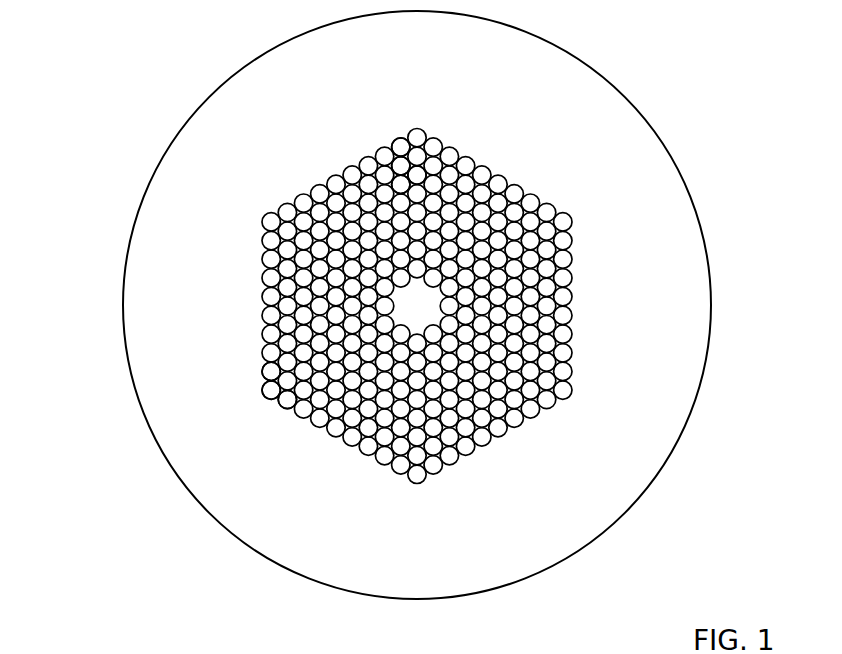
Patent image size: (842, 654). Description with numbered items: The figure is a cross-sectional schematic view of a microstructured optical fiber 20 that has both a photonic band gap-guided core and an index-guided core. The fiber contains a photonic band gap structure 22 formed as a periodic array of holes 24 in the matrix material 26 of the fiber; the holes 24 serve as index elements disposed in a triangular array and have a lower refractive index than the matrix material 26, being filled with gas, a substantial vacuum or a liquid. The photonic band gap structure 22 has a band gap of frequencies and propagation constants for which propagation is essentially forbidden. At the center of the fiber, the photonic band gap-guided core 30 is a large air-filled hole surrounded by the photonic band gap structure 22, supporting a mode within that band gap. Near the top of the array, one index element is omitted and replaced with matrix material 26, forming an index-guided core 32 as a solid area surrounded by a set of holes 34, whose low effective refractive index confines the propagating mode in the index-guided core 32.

The microstructured optical fiber 20 is at (122, 55).
The photonic band gap structure 22 is at (590, 409).
The holes 24 is at (286, 400).
The matrix material 26 is at (303, 450).
The photonic band gap-guided core 30 is at (413, 310).
The index-guided core 32 is at (423, 173).
The set of holes 34 is at (401, 185).